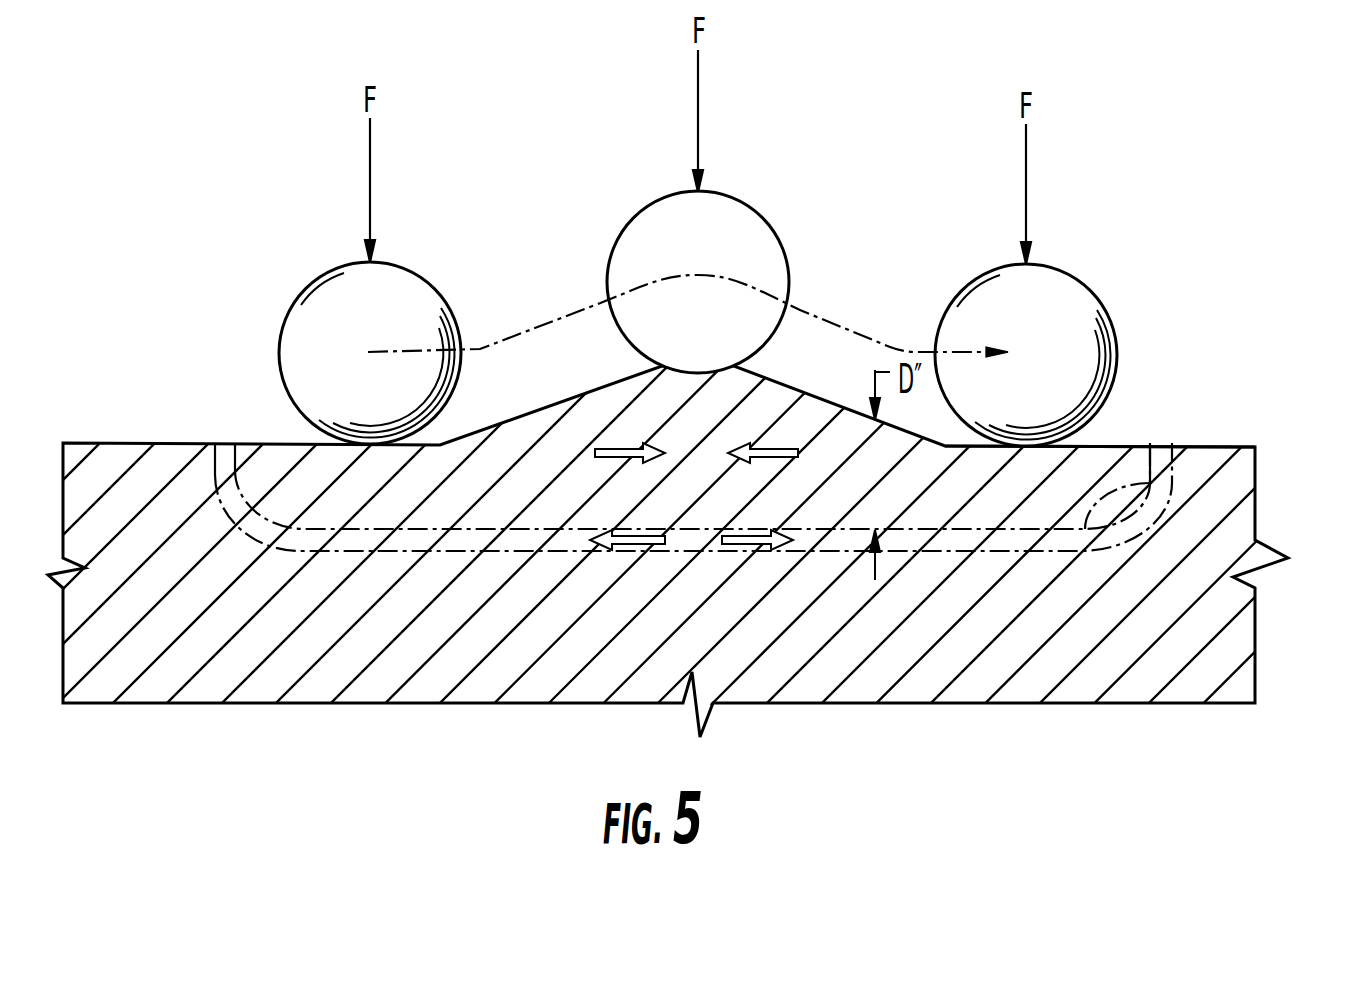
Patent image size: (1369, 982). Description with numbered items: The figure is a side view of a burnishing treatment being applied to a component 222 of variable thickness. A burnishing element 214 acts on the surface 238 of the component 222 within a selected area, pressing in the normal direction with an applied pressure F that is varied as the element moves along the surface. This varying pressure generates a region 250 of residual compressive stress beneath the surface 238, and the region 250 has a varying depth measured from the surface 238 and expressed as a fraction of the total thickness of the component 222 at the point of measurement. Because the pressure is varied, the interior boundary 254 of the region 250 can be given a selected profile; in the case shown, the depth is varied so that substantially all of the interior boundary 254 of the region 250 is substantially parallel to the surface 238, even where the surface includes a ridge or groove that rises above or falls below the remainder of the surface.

The burnishing element 214 is at (400, 278).
The component 222 is at (1238, 488).
The surface 238 is at (1205, 447).
The region of residual compressive stress 250 is at (1108, 456).
The interior boundary 254 is at (1008, 527).